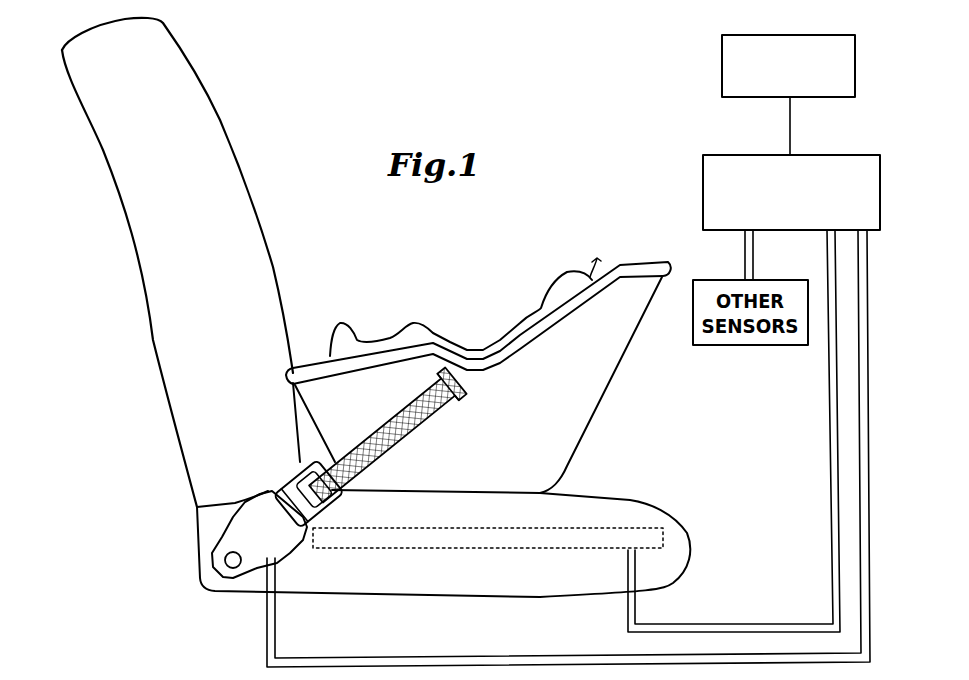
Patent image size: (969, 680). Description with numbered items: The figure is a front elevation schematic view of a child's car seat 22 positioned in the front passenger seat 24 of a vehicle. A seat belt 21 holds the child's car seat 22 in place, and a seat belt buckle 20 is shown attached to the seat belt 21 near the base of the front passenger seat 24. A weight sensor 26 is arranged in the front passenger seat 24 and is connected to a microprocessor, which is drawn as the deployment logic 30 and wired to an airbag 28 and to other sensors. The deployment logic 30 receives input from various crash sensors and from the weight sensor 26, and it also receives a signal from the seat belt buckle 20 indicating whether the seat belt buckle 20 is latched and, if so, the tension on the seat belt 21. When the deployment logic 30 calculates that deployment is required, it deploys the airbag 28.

The seat belt buckle 20 is at (203, 517).
The seat belt 21 is at (420, 427).
The child's car seat 22 is at (607, 390).
The front passenger seat 24 is at (630, 498).
The weight sensor 26 is at (572, 550).
The airbag 28 is at (722, 75).
The deployment logic 30 is at (703, 192).